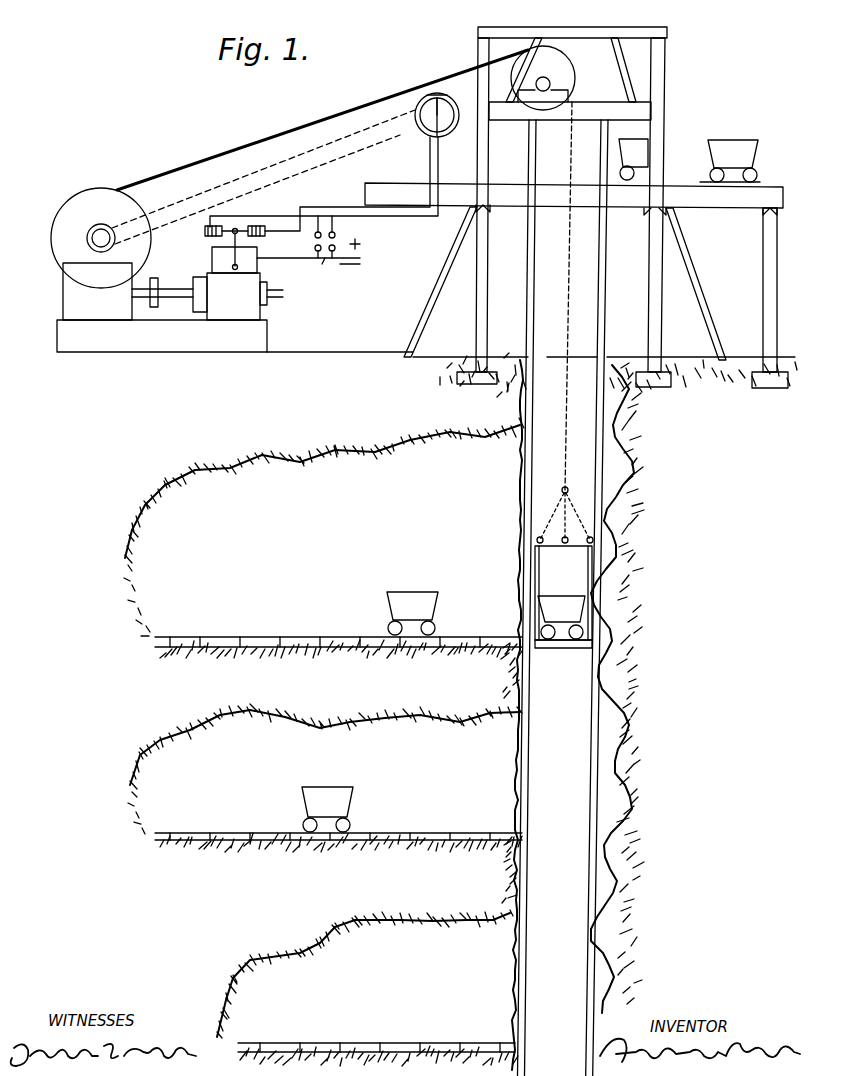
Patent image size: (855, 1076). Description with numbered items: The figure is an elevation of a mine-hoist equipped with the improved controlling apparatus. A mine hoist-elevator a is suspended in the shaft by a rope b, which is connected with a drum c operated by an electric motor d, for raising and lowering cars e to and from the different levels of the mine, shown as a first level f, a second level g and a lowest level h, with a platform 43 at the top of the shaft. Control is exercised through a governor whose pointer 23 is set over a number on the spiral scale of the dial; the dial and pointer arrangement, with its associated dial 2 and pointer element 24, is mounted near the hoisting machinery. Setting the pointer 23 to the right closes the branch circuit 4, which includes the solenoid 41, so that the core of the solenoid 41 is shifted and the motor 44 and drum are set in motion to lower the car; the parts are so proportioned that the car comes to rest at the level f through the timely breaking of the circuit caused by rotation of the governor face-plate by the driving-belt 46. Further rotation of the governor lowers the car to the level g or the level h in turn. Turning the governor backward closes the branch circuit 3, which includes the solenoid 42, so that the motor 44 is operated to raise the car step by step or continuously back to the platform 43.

The indicator dial 2 is at (415, 114).
The branch circuit 3 is at (378, 228).
The branch circuit 4 is at (338, 214).
The pointer 23 is at (437, 93).
The pointer shaft 24 is at (455, 110).
The solenoid 41 is at (265, 233).
The solenoid 42 is at (205, 233).
The platform 43 is at (697, 186).
The motor 44 is at (291, 288).
The driving-belt 46 is at (338, 178).
The mine hoist-elevator a is at (580, 648).
The rope b is at (569, 330).
The drum c is at (52, 241).
The electric motor d is at (255, 310).
The cars e is at (636, 158).
The first level f is at (324, 538).
The second level g is at (325, 778).
The lowest level h is at (433, 1050).